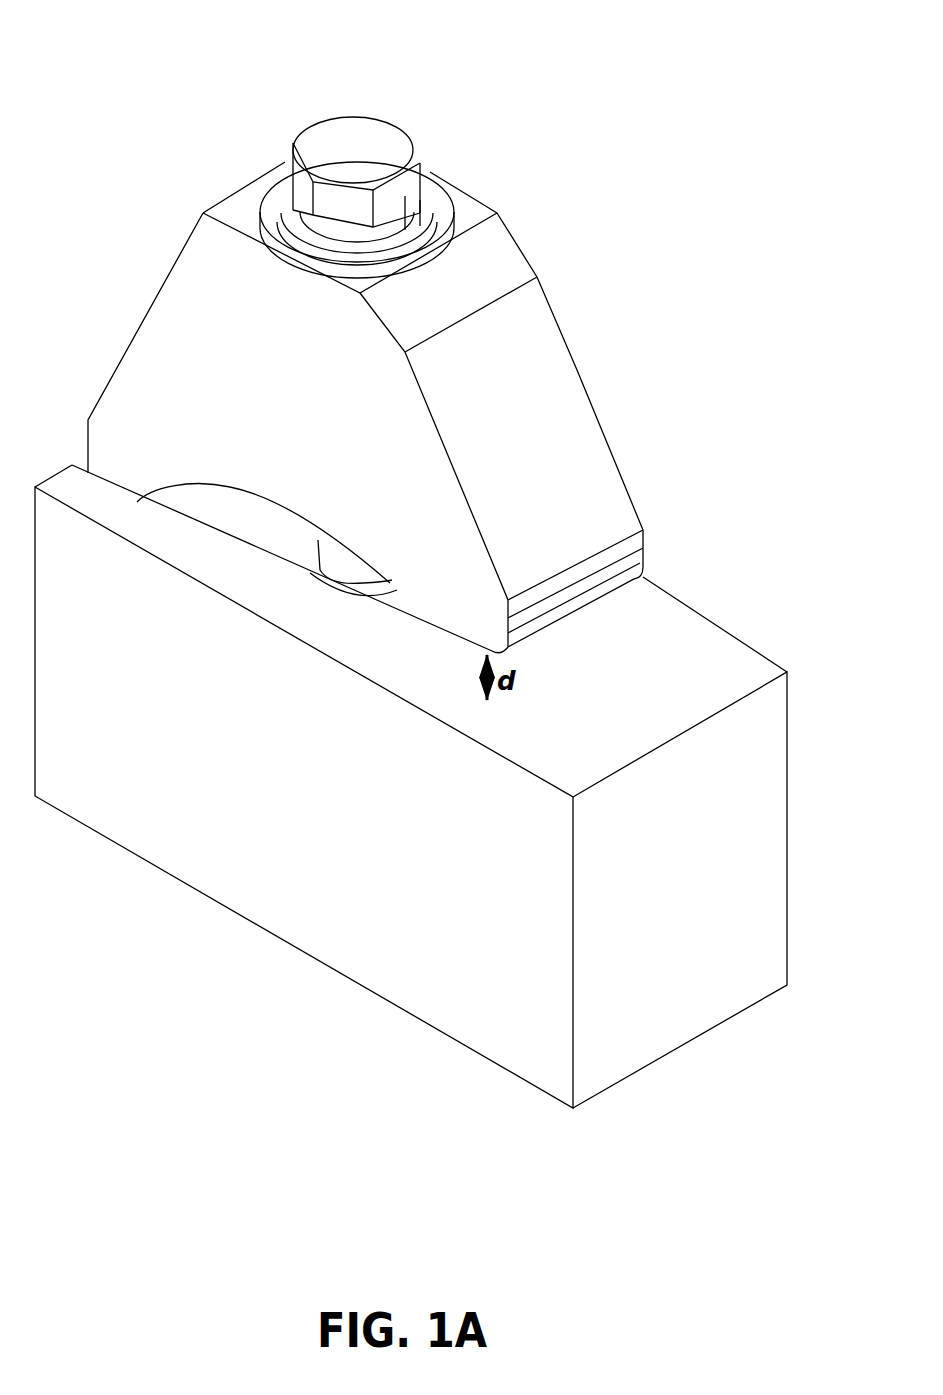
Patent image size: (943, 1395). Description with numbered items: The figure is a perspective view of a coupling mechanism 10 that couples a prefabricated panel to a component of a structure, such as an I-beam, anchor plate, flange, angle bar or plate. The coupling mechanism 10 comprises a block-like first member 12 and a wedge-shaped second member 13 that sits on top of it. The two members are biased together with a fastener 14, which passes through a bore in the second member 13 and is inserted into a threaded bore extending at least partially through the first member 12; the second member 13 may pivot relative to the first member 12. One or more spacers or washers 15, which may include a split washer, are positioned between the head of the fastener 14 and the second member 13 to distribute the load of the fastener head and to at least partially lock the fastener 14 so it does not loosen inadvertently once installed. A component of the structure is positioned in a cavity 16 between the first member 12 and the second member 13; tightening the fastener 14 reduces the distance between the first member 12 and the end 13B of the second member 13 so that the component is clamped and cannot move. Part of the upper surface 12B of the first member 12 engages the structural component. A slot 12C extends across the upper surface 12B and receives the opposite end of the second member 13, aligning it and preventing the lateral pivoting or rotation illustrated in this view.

The coupling mechanism 10 is at (168, 78).
The first member 12 is at (683, 985).
The upper surface of first member 12B is at (698, 647).
The slot 12C is at (245, 548).
The second member 13 is at (485, 425).
The end of second member 13B is at (585, 582).
The fastener 14 is at (365, 157).
The spacers or washers 15 is at (410, 212).
The cavity 16 is at (453, 632).